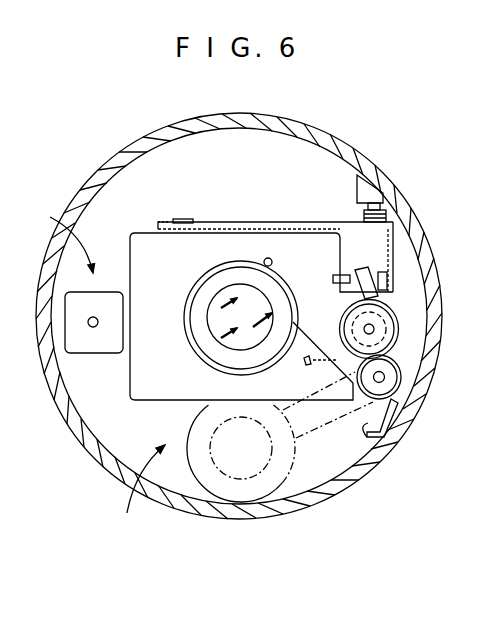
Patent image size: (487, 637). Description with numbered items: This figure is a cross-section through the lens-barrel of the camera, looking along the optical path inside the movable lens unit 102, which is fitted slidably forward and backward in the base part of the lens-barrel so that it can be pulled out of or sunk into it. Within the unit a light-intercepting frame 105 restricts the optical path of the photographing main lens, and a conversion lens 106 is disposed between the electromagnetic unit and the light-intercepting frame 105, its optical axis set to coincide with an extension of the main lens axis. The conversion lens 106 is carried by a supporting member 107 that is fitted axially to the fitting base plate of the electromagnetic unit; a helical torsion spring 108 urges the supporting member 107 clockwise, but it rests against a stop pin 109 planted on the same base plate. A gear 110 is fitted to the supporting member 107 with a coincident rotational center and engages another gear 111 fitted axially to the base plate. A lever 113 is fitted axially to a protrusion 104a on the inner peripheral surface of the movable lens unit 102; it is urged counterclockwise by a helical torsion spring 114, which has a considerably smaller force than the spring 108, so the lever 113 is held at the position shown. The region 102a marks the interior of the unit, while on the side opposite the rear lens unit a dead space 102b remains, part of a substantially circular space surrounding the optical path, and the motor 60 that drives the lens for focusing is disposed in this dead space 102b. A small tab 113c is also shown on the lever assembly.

The motor 60 is at (65, 340).
The movable lens unit 102 is at (172, 135).
The housing interior chamber 102a is at (132, 490).
The dead space 102b is at (55, 233).
The protrusion 104a is at (356, 182).
The light-intercepting frame 105 is at (130, 390).
The conversion lens 106 is at (220, 330).
The supporting member 107 is at (198, 282).
The helical torsion spring 108 is at (365, 436).
The stop pin 109 is at (268, 258).
The gear 110 is at (392, 381).
The gear 111 is at (390, 333).
The lever 113 is at (227, 222).
The plate tab 113c is at (182, 219).
The helical torsion spring 114 is at (325, 221).